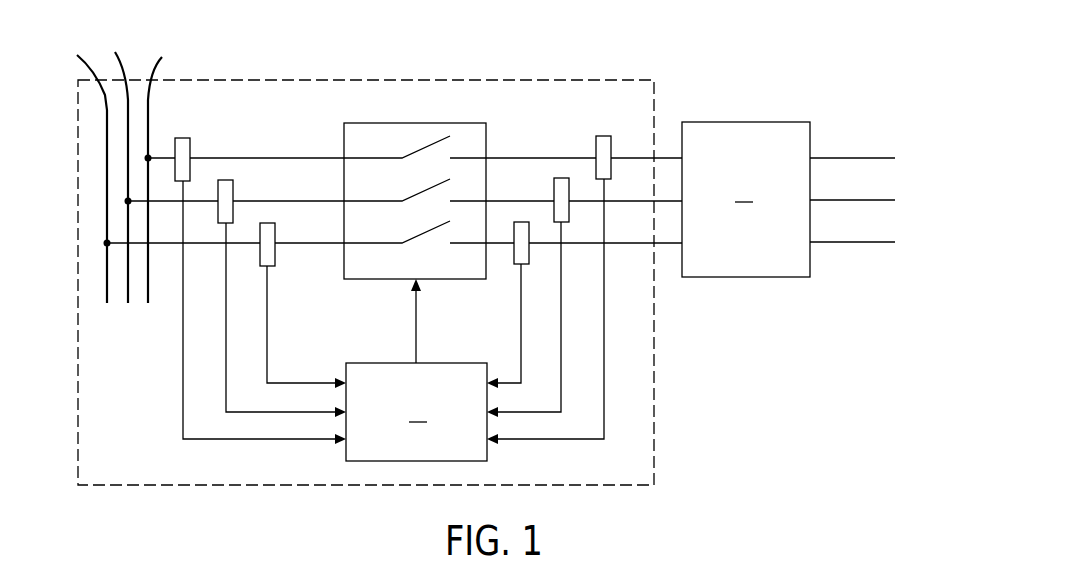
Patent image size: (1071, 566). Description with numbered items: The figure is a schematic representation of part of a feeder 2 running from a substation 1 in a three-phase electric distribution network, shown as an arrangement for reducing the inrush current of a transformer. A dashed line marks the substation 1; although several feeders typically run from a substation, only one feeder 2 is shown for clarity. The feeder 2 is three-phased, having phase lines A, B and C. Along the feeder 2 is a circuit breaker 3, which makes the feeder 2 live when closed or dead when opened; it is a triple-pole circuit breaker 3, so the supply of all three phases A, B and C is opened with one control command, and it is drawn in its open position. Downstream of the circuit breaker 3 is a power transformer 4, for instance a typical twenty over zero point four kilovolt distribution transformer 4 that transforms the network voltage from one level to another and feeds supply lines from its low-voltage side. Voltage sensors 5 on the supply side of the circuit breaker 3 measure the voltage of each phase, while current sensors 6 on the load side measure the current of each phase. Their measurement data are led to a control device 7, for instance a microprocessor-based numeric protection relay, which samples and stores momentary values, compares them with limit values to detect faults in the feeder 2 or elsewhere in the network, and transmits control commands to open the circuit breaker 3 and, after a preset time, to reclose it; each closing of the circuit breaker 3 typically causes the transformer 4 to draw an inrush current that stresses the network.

The substation 1 is at (317, 68).
The feeder 2 is at (244, 146).
The circuit breaker 3 is at (470, 133).
The power transformer 4 is at (788, 199).
The voltage sensors 5 is at (182, 145).
The current sensors 6 is at (603, 142).
The control device 7 is at (416, 370).
The phase A is at (81, 169).
The phase B is at (112, 166).
The phase C is at (165, 170).